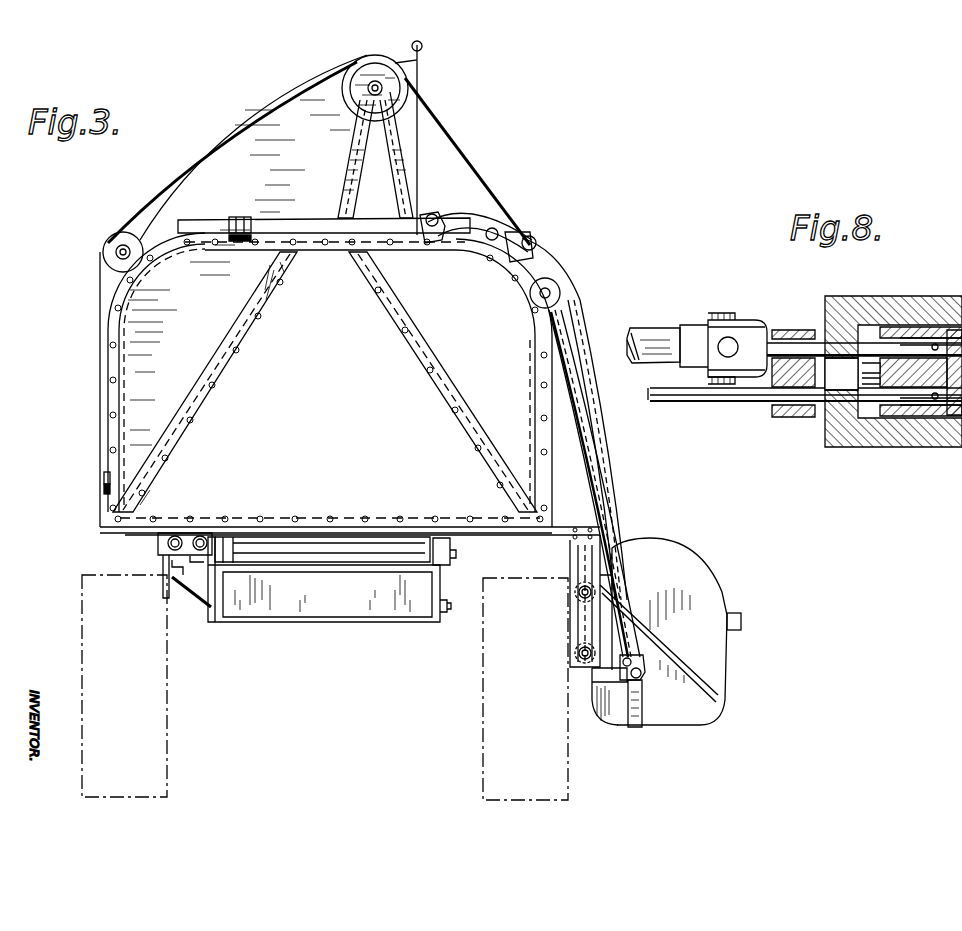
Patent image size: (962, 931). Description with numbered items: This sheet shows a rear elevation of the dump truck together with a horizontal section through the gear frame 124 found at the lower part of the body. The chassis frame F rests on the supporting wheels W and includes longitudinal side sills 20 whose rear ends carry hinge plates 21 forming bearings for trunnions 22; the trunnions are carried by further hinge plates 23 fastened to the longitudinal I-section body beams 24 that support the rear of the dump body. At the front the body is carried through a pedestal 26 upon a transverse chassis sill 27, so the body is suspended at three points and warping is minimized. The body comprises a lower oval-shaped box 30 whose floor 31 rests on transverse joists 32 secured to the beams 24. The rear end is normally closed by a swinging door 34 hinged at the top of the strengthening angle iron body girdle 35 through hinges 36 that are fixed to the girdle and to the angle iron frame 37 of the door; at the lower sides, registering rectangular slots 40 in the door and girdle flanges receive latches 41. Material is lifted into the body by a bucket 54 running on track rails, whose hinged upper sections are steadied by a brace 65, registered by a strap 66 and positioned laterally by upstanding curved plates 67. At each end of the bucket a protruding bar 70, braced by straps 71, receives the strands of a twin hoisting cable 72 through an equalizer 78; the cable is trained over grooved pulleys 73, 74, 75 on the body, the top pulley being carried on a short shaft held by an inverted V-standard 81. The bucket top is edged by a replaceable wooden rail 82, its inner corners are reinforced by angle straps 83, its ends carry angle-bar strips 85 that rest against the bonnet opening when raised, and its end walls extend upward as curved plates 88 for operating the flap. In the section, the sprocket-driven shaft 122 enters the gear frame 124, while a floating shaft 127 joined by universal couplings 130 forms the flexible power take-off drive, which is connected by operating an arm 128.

In FIG. 3, the longitudinal side sills 20 is at (215, 618).
In FIG. 3, the hinge plates 21 is at (442, 594).
In FIG. 3, the trunnions 22 is at (456, 554).
In FIG. 3, the hinge plates 23 is at (430, 540).
In FIG. 3, the longitudinal beams 24 is at (262, 550).
In FIG. 3, the pedestal 26 is at (330, 585).
In FIG. 3, the transverse chassis sill 27 is at (384, 593).
In FIG. 3, the box 30 is at (122, 385).
In FIG. 3, the floor 31 is at (232, 515).
In FIG. 3, the transverse joists 32 is at (548, 533).
In FIG. 3, the swinging door 34 is at (205, 382).
In FIG. 3, the angle iron body girdle 35 is at (200, 225).
In FIG. 3, the hinges 36 is at (238, 217).
In FIG. 3, the angle iron frame 37 is at (258, 232).
In FIG. 3, the rectangular slots 40 is at (100, 476).
In FIG. 3, the latches 41 is at (100, 490).
In FIG. 3, the bucket 54 is at (712, 664).
In FIG. 3, the brace 65 is at (455, 210).
In FIG. 3, the strap 66 is at (520, 240).
In FIG. 3, the upstanding curved plates 67 is at (540, 235).
In FIG. 3, the protruding bar 70 is at (645, 678).
In FIG. 3, the straps 71 is at (590, 670).
In FIG. 3, the twin hoisting cable 72 is at (470, 160).
In FIG. 3, the grooved pulley 73 is at (562, 298).
In FIG. 3, the grooved pulley 74 is at (375, 62).
In FIG. 3, the grooved pulley 75 is at (110, 252).
In FIG. 3, the equalizer 78 is at (716, 674).
In FIG. 3, the inverted V-standards 81 is at (356, 152).
In FIG. 3, the wooden rail 82 is at (741, 622).
In FIG. 3, the angle straps 83 is at (612, 575).
In FIG. 3, the angle-bar strips 85 is at (652, 647).
In FIG. 3, the curved plates 88 is at (640, 547).
In FIG. 8, the shaft 122 is at (715, 402).
In FIG. 3, the gear frame 124 is at (176, 582).
In FIG. 8, the gear frame 124 is at (845, 447).
In FIG. 8, the floating shaft 127 is at (665, 318).
In FIG. 3, the arm 128 is at (162, 593).
In FIG. 8, the universal couplings 130 is at (750, 322).
In FIG. 3, the chassis frame F is at (320, 626).
In FIG. 3, the supporting wheels W is at (160, 680).